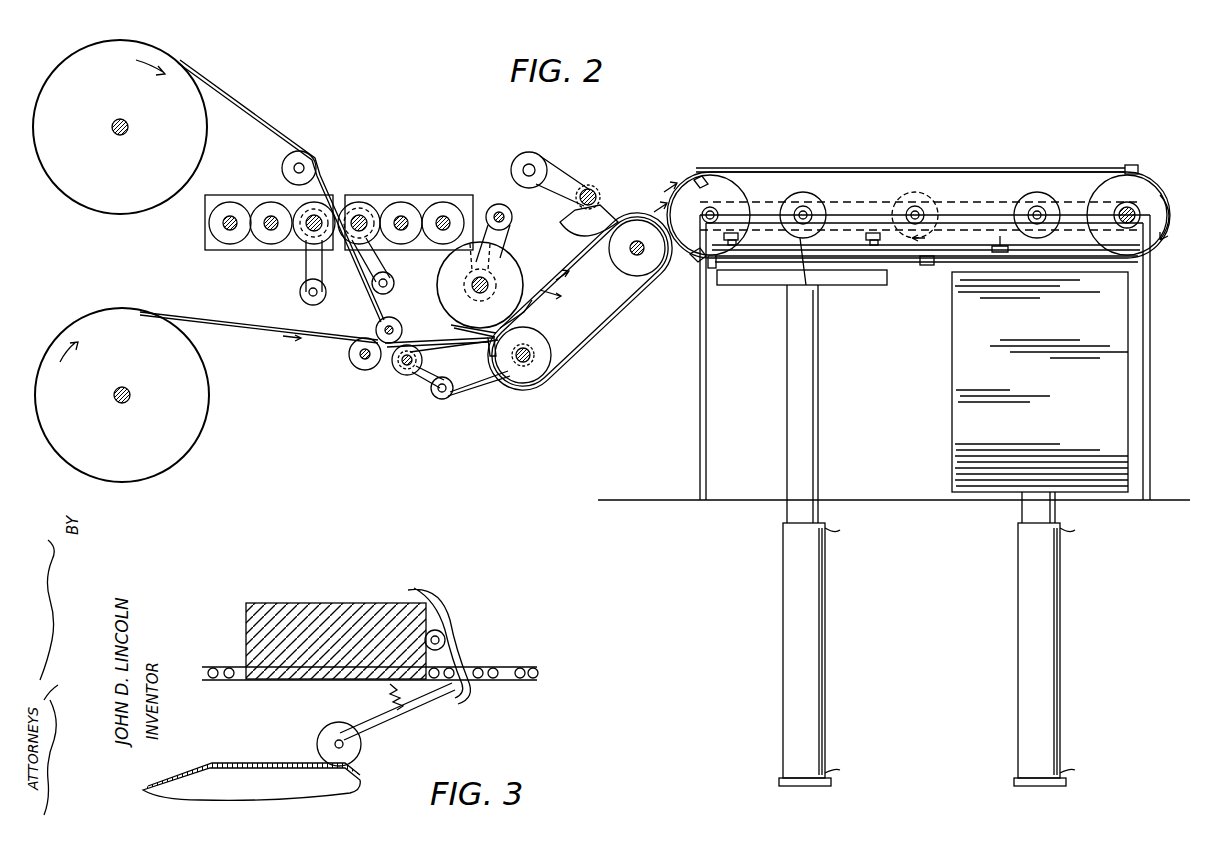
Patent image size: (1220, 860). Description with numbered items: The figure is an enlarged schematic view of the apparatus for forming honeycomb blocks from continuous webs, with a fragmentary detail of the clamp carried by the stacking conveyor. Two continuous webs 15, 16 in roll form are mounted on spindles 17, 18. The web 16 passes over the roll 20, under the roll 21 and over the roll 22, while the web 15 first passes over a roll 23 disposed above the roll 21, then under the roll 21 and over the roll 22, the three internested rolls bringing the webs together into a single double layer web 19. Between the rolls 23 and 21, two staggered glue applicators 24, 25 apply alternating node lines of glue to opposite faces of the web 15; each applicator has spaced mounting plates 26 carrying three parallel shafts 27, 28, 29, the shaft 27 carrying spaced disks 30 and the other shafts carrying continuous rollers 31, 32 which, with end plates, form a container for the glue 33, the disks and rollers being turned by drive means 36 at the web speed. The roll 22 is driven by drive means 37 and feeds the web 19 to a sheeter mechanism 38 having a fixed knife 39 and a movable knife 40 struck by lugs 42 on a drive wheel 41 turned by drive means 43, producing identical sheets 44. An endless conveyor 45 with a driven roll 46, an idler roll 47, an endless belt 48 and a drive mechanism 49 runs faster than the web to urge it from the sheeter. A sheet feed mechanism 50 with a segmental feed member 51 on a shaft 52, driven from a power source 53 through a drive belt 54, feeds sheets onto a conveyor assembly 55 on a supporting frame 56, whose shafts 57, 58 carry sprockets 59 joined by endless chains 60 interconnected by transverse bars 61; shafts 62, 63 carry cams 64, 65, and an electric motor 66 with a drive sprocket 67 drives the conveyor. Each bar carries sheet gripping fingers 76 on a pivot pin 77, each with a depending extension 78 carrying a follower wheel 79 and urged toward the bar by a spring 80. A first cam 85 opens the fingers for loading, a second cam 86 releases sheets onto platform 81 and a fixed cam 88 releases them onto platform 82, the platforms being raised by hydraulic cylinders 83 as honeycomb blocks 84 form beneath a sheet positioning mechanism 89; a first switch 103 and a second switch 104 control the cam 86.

In FIG. 2, the continuous web 15 is at (283, 133).
In FIG. 2, the continuous web 16 is at (268, 320).
In FIG. 2, the spindle 17 is at (128, 127).
In FIG. 2, the spindle 18 is at (130, 395).
In FIG. 2, the double layer web 19 is at (436, 350).
In FIG. 2, the roll 20 is at (360, 370).
In FIG. 2, the roll 21 is at (376, 330).
In FIG. 2, the roll 22 is at (403, 375).
In FIG. 2, the roll 23 is at (282, 165).
In FIG. 2, the glue applicator 24 is at (270, 264).
In FIG. 2, the glue applicator 25 is at (421, 184).
In FIG. 2, the mounting plates 26 is at (470, 200).
In FIG. 2, the shaft 27 is at (361, 222).
In FIG. 2, the shaft 28 is at (401, 215).
In FIG. 2, the shaft 29 is at (443, 215).
In FIG. 2, the disks 30 is at (352, 210).
In FIG. 2, the roller 31 is at (398, 240).
In FIG. 2, the roller 32 is at (430, 240).
In FIG. 2, the glue 33 is at (250, 205).
In FIG. 2, the drive means 36 is at (394, 283).
In FIG. 2, the drive means 37 is at (432, 400).
In FIG. 2, the sheeter mechanism 38 is at (482, 278).
In FIG. 2, the fixed knife 39 is at (488, 352).
In FIG. 2, the movable knife 40 is at (478, 305).
In FIG. 2, the drive wheel 41 is at (452, 310).
In FIG. 2, the lugs 42 is at (455, 328).
In FIG. 2, the drive means 43 is at (512, 216).
In FIG. 2, the sheets 44 is at (810, 168).
In FIG. 2, the endless conveyor 45 is at (580, 306).
In FIG. 2, the driven roll 46 is at (536, 340).
In FIG. 2, the idler roll 47 is at (632, 270).
In FIG. 2, the endless belt 48 is at (612, 330).
In FIG. 2, the drive mechanism 49 is at (494, 387).
In FIG. 2, the sheet feed mechanism 50 is at (578, 173).
In FIG. 2, the segmental feed member 51 is at (600, 216).
In FIG. 2, the shaft 52 is at (596, 192).
In FIG. 2, the power source 53 is at (535, 152).
In FIG. 2, the drive belt 54 is at (578, 170).
In FIG. 2, the conveyor assembly 55 is at (928, 216).
In FIG. 2, the supporting frame 56 is at (700, 380).
In FIG. 2, the shaft 57 is at (1135, 210).
In FIG. 2, the shaft 58 is at (692, 196).
In FIG. 2, the sprockets 59 is at (722, 180).
In FIG. 2, the endless chains 60 is at (944, 204).
In FIG. 3, the endless chains 60 is at (502, 668).
In FIG. 2, the bars 61 is at (700, 262).
In FIG. 3, the bars 61 is at (356, 603).
In FIG. 2, the shaft 62 is at (1037, 210).
In FIG. 2, the shaft 63 is at (806, 210).
In FIG. 2, the cam 64 is at (1050, 205).
In FIG. 2, the cam 65 is at (808, 260).
In FIG. 2, the electric motor 66 is at (922, 182).
In FIG. 2, the drive sprocket 67 is at (906, 196).
In FIG. 2, the sheet gripping fingers 76 is at (692, 250).
In FIG. 3, the sheet gripping fingers 76 is at (452, 605).
In FIG. 3, the pivot pin 77 is at (445, 640).
In FIG. 3, the depending extension 78 is at (440, 700).
In FIG. 3, the follower wheel 79 is at (335, 722).
In FIG. 3, the spring 80 is at (394, 706).
In FIG. 2, the platform 81 is at (950, 483).
In FIG. 2, the platform 82 is at (874, 285).
In FIG. 2, the hydraulic cylinders 83 is at (826, 572).
In FIG. 2, the honeycomb block 84 is at (950, 342).
In FIG. 2, the first cam 85 is at (690, 178).
In FIG. 3, the first cam 85 is at (268, 766).
In FIG. 2, the second cam 86 is at (940, 256).
In FIG. 2, the fixed cam 88 is at (730, 262).
In FIG. 2, the sheet positioning mechanism 89 is at (857, 230).
In FIG. 2, the first switch 103 is at (925, 268).
In FIG. 2, the second switch 104 is at (712, 268).